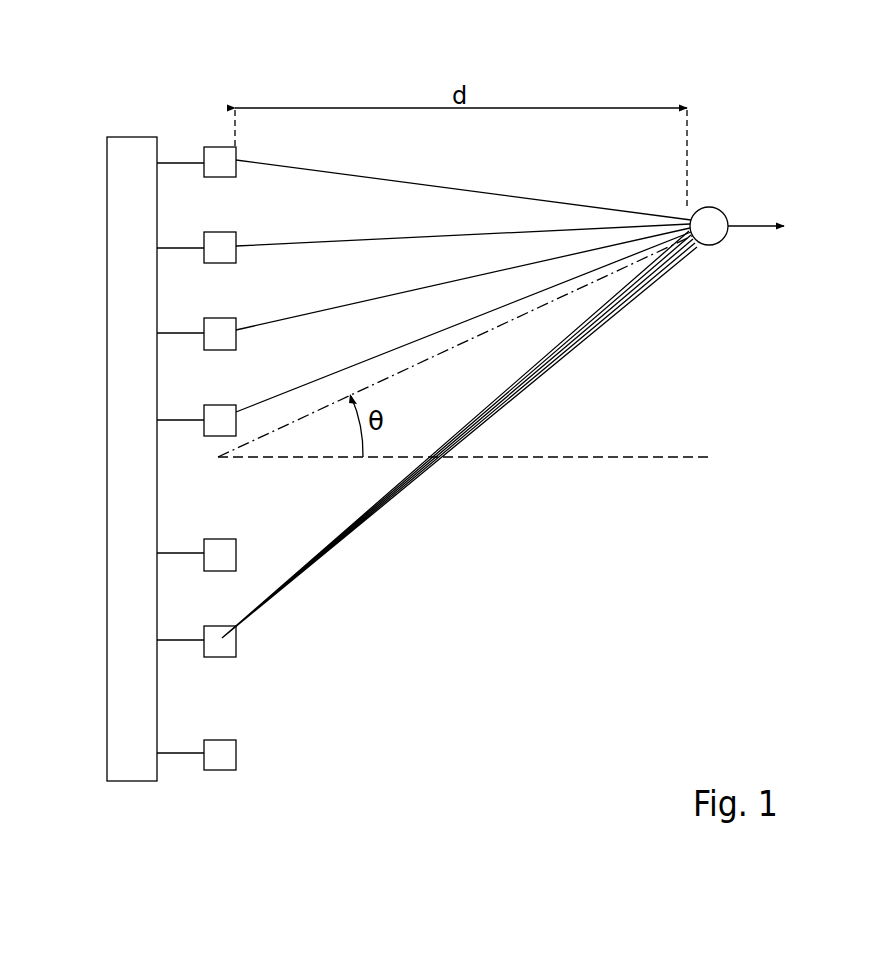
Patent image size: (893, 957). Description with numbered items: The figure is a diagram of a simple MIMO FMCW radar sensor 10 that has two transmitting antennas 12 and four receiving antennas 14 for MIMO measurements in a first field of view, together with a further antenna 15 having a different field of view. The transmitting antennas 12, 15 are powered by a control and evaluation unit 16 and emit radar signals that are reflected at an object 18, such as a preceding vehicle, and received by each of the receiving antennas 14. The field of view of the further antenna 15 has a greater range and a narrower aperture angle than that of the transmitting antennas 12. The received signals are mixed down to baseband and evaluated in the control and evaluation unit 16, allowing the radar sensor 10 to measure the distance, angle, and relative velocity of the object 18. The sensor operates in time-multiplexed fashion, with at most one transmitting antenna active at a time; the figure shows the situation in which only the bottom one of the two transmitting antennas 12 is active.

The FMCW radar sensor 10 is at (266, 74).
The transmitting antenna 12 is at (236, 553).
The receiving antenna 14 is at (236, 151).
The further antenna 15 is at (236, 755).
The control and evaluation unit 16 is at (107, 458).
The object 18 is at (711, 207).